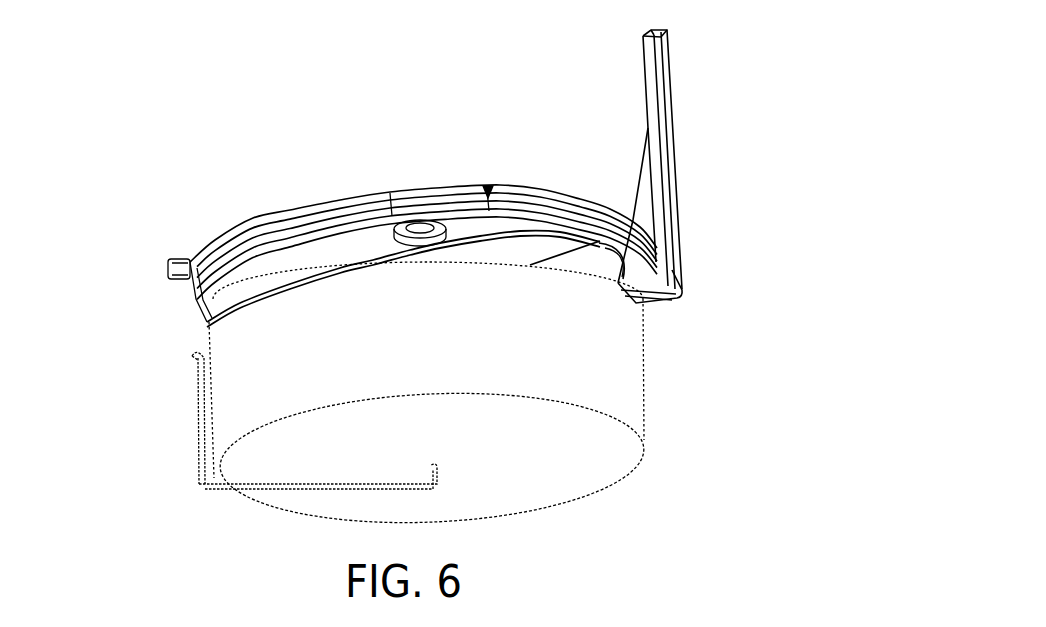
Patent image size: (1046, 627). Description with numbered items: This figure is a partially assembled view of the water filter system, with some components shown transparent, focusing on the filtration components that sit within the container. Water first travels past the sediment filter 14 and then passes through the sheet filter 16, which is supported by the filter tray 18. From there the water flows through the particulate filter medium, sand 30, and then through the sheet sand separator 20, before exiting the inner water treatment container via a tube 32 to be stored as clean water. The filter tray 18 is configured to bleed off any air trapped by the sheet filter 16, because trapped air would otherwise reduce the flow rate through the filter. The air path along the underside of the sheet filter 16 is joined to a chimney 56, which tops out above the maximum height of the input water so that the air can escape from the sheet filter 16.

The sediment filter 14 is at (452, 188).
The sheet filter 16 is at (597, 270).
The filter tray 18 is at (375, 257).
The sheet sand separator 20 is at (617, 463).
The sand 30 is at (620, 403).
The tube 32 is at (198, 422).
The chimney 56 is at (667, 58).